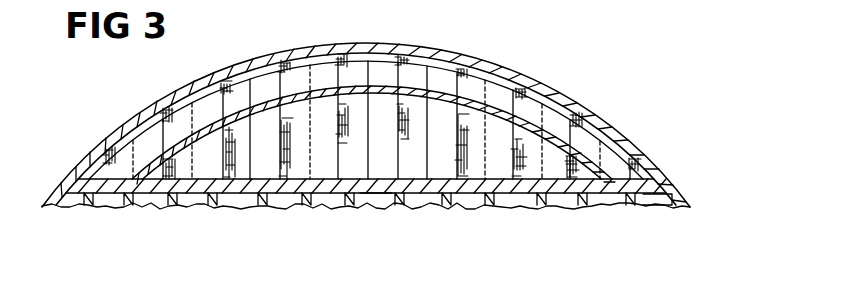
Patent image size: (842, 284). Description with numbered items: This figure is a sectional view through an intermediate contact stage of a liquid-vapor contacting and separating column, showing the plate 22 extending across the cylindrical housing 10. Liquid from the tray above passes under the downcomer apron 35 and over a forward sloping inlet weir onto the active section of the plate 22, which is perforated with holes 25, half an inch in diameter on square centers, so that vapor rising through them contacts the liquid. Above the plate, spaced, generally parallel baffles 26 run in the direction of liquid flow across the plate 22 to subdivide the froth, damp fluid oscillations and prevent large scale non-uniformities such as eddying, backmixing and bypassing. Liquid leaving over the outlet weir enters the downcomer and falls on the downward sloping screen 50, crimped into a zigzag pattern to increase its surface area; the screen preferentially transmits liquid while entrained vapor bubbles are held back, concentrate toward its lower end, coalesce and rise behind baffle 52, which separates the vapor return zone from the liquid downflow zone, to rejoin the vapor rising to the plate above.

The cylindrical housing 10 is at (505, 68).
The plate 22 is at (428, 198).
The holes 25 is at (156, 203).
The baffles 26 is at (203, 202).
The downcomer apron 35 is at (370, 197).
The downward sloping screen 50 is at (303, 173).
The baffle 52 is at (273, 88).